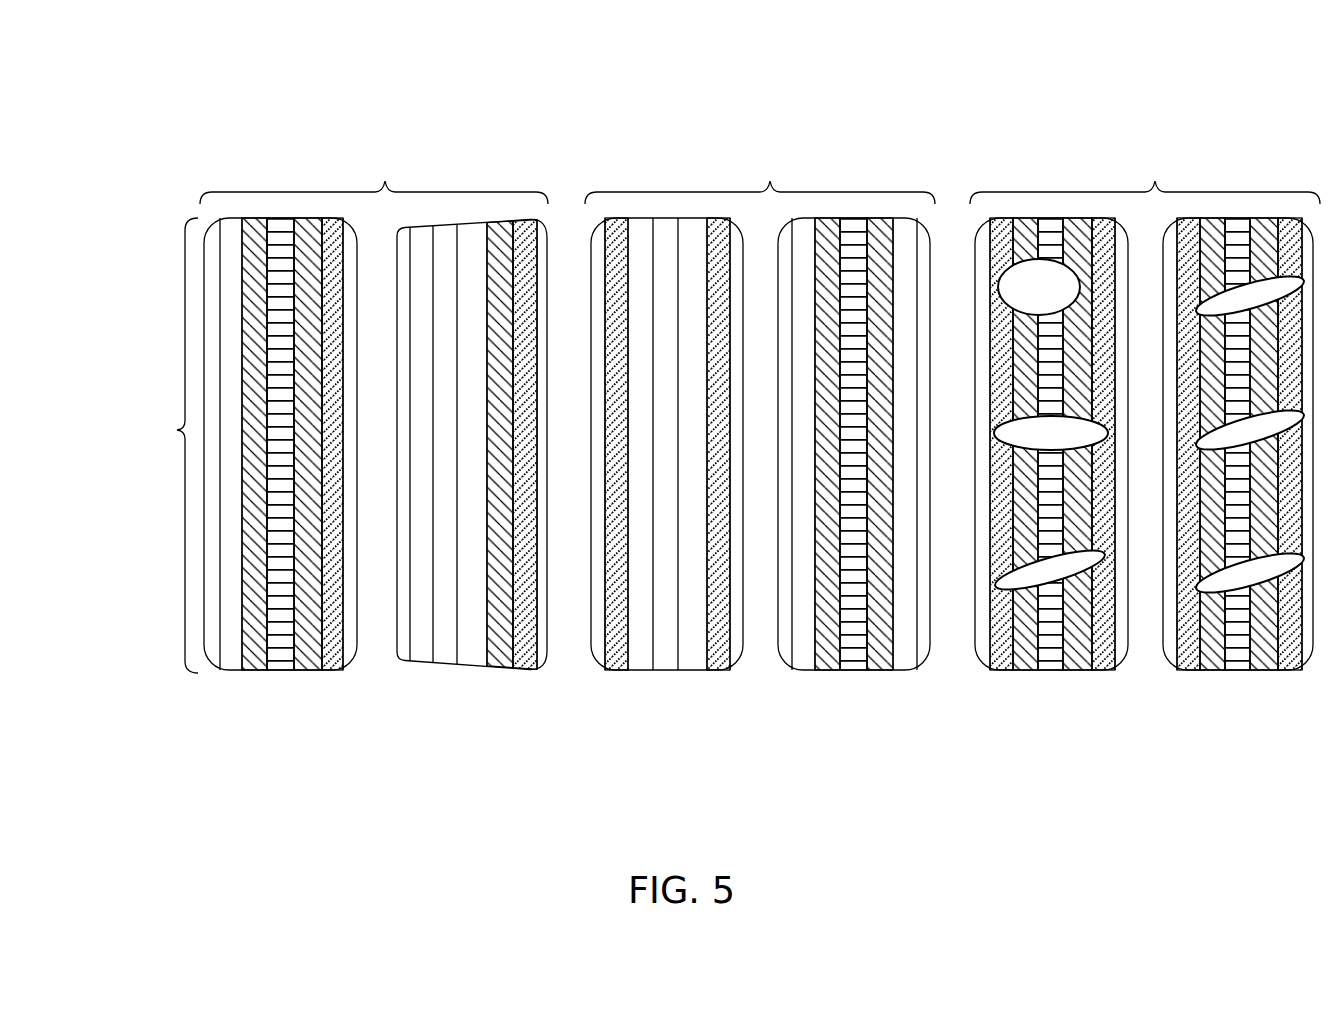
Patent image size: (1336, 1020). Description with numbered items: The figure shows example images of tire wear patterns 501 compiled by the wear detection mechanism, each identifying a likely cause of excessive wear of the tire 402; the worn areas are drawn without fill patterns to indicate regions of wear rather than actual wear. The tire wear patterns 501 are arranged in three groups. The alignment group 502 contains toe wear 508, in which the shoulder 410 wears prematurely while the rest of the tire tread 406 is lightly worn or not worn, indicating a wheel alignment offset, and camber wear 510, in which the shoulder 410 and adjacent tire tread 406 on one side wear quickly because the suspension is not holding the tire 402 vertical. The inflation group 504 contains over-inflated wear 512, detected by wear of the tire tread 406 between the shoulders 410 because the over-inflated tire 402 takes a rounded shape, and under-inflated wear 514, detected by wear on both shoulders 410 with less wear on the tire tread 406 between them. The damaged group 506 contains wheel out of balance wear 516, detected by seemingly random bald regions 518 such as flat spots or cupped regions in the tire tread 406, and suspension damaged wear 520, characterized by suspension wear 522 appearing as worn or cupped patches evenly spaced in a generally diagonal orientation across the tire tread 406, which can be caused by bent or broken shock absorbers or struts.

The tire wear patterns 501 is at (203, 92).
The alignment group 502 is at (386, 186).
The inflation group 504 is at (771, 186).
The damaged group 506 is at (1155, 186).
The tire 402 is at (177, 431).
The tire tread 406 is at (252, 655).
The shoulder 410 is at (232, 658).
The toe wear 508 is at (265, 678).
The camber wear 510 is at (469, 673).
The over-inflated wear 512 is at (690, 673).
The under-inflated wear 514 is at (858, 673).
The wheel out of balance wear 516 is at (1058, 673).
The bald regions 518 is at (1070, 445).
The suspension damaged wear 520 is at (1232, 673).
The suspension wear 522 is at (1235, 578).